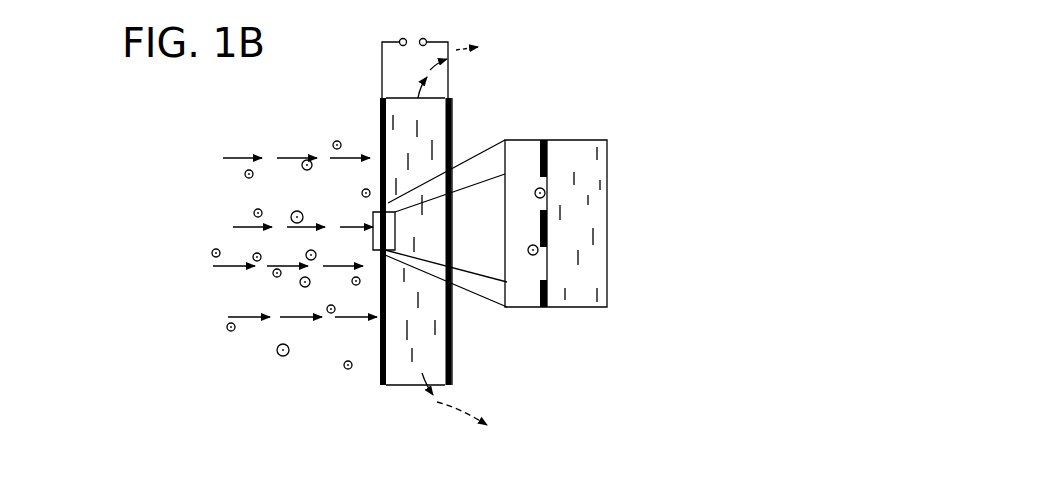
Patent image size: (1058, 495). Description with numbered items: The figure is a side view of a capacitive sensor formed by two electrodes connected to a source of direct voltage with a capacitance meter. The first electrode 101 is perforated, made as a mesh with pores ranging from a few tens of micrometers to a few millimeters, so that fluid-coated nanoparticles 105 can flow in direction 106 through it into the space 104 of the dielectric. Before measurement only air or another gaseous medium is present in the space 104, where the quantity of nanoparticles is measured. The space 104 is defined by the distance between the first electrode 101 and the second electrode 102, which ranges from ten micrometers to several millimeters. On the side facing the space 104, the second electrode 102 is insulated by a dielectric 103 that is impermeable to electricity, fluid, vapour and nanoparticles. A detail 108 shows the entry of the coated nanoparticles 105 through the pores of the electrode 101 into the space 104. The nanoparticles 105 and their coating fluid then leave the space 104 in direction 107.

The first electrode 101 is at (380, 123).
The second electrode 102 is at (452, 130).
The dielectric 103 is at (449, 108).
The space of the dielectric 104 is at (405, 378).
The fluid coated nanoparticles 105 is at (278, 354).
The direction of nanoparticle inflow 106 is at (287, 158).
The direction of outflow 107 is at (445, 55).
The detail 108 is at (558, 140).